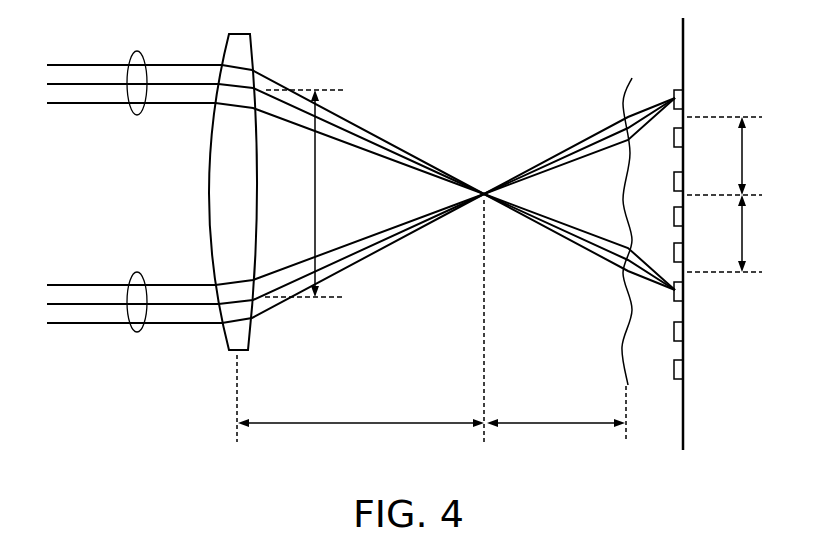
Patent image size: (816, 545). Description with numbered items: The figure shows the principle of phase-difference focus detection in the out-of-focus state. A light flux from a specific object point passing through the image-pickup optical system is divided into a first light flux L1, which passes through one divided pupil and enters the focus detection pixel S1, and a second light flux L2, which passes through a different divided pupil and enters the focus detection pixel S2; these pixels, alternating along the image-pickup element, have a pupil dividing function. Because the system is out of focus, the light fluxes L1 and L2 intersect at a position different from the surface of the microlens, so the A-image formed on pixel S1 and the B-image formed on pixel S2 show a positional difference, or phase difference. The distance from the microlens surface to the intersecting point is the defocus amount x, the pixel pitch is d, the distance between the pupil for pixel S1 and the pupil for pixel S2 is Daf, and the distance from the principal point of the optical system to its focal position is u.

The first light flux L1 is at (137, 332).
The second light flux L2 is at (137, 51).
The focus detection pixel S1 is at (697, 216).
The focus detection pixel S2 is at (697, 254).
The distance between pupils Daf is at (313, 193).
The pixel pitch d is at (725, 194).
The distance from principal point to focal position u is at (361, 433).
The defocus amount x is at (556, 434).